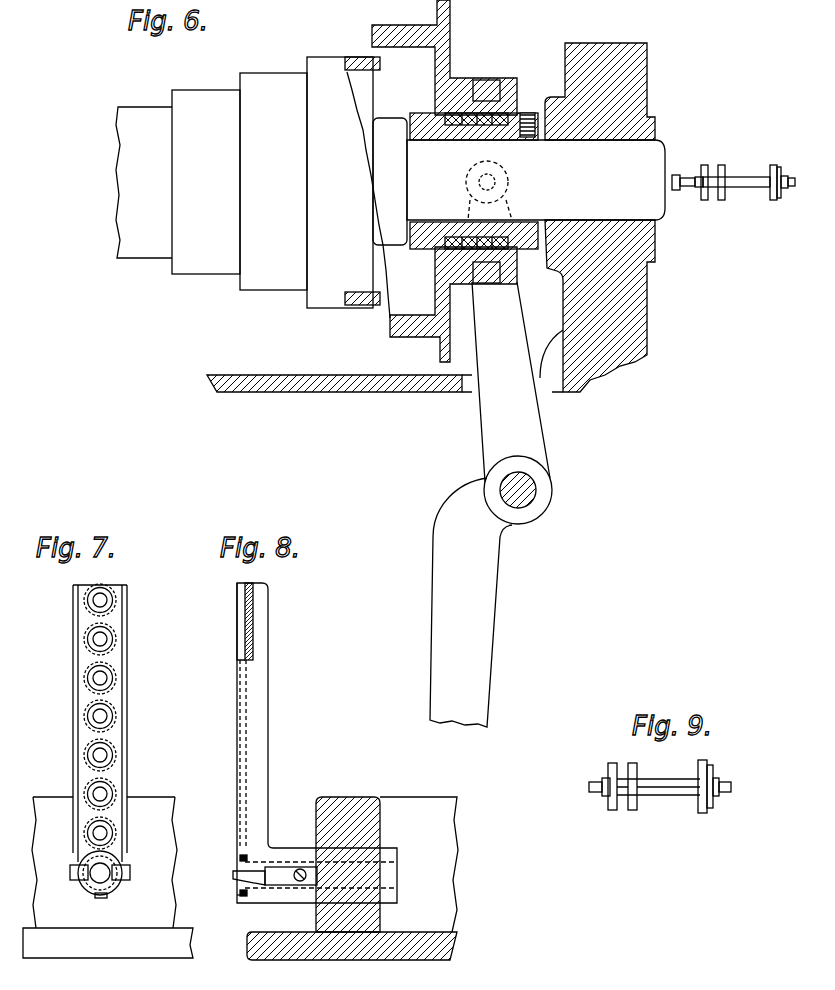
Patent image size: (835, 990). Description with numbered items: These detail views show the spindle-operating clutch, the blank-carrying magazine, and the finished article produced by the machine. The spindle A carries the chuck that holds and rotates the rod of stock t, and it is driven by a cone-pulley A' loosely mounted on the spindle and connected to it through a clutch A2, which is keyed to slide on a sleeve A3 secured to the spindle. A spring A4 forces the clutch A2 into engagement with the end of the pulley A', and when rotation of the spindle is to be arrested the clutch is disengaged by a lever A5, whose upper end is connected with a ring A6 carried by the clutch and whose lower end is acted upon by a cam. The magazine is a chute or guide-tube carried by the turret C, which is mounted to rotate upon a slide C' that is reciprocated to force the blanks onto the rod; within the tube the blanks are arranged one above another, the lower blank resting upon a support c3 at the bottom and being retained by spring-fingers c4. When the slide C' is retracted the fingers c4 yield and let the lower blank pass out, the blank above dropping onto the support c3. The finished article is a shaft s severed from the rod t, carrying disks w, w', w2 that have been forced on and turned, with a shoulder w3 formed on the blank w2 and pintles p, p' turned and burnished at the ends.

In FIG. 6, the spindle A is at (536, 180).
In FIG. 6, the cone-pulley A' is at (273, 181).
In FIG. 6, the clutch A2 is at (446, 50).
In FIG. 6, the sleeve A3 is at (462, 142).
In FIG. 6, the spring A4 is at (490, 134).
In FIG. 6, the lever A5 is at (493, 411).
In FIG. 6, the ring A6 is at (487, 84).
In FIG. 6, the pintle p is at (734, 164).
In FIG. 9, the pintle p is at (728, 778).
In FIG. 6, the pintle p' is at (706, 161).
In FIG. 9, the pintle p' is at (588, 778).
In FIG. 6, the shaft s is at (740, 177).
In FIG. 9, the shaft s is at (678, 796).
In FIG. 6, the rod of stock t is at (674, 192).
In FIG. 6, the disk w is at (699, 207).
In FIG. 8, the disk w is at (224, 619).
In FIG. 9, the disk w is at (601, 808).
In FIG. 6, the disk w' is at (724, 198).
In FIG. 9, the disk w' is at (632, 808).
In FIG. 6, the disk w2 is at (773, 165).
In FIG. 9, the disk w2 is at (700, 814).
In FIG. 9, the shoulder w3 is at (710, 812).
In FIG. 7, the turret C is at (110, 739).
In FIG. 8, the turret C is at (317, 743).
In FIG. 8, the slide C' is at (353, 846).
In FIG. 7, the support c3 is at (107, 896).
In FIG. 8, the support c3 is at (240, 900).
In FIG. 8, the spring-fingers c4 is at (233, 874).